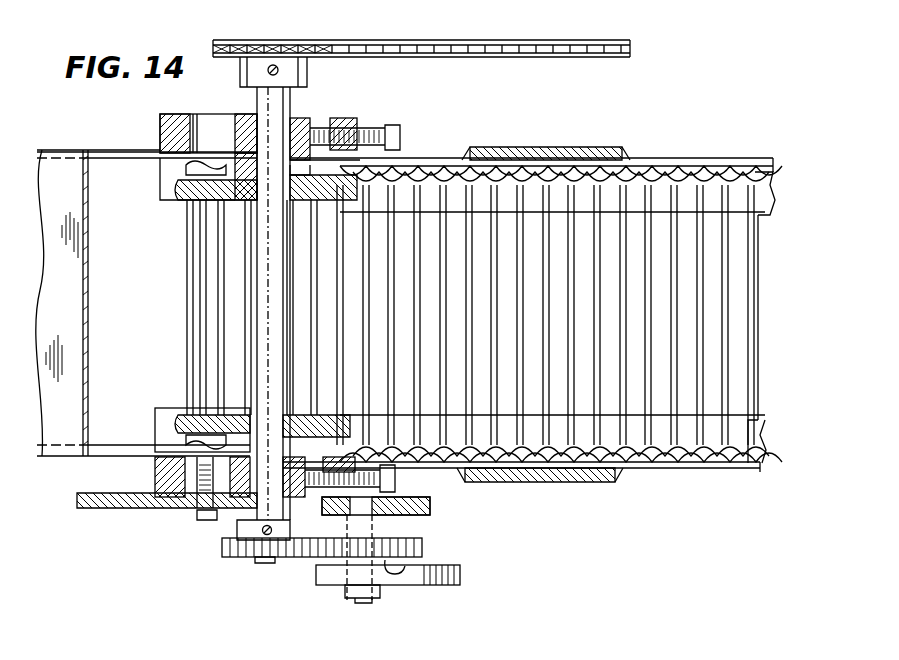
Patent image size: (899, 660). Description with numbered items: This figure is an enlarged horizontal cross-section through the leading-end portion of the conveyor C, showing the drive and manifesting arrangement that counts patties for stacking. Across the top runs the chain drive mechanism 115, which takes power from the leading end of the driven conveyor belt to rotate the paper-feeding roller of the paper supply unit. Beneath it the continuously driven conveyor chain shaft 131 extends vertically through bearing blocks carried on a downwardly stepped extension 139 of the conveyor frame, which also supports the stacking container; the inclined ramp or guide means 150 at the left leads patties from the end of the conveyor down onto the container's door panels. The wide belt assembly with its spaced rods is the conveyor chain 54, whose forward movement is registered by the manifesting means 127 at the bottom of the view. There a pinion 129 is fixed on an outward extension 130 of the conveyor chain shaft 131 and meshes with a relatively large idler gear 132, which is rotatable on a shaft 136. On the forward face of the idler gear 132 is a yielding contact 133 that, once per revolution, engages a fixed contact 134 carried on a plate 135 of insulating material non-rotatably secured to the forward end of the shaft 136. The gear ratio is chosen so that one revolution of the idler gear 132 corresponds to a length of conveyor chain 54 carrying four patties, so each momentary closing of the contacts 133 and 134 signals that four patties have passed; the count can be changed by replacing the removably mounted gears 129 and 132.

The chain drive mechanism 115 is at (505, 45).
The conveyor chain shaft 131 is at (262, 497).
The downwardly stepped extension 139 is at (122, 152).
The inclined ramp or guide means 150 is at (85, 315).
The conveyor C is at (668, 152).
The conveyor chain 54 is at (662, 462).
The manifesting means 127 is at (287, 576).
The pinion 129 is at (222, 548).
The outward extension 130 is at (263, 562).
The idler gear 132 is at (420, 538).
The yielding contact 133 is at (420, 557).
The fixed contact 134 is at (438, 568).
The plate of insulating material 135 is at (332, 580).
The shaft 136 is at (362, 600).